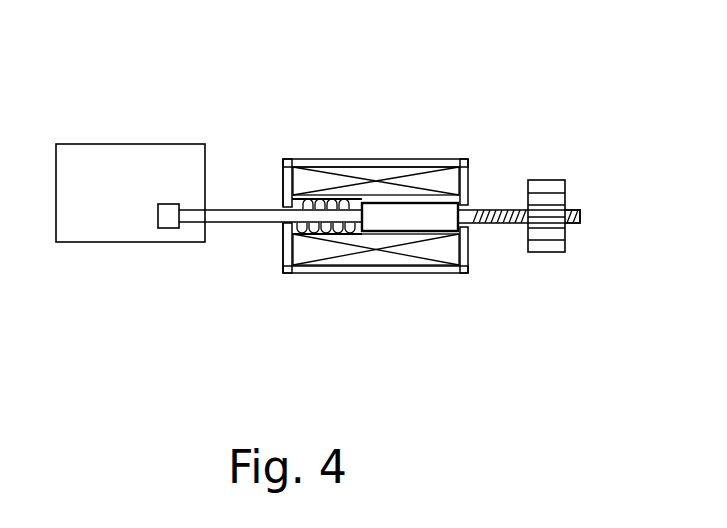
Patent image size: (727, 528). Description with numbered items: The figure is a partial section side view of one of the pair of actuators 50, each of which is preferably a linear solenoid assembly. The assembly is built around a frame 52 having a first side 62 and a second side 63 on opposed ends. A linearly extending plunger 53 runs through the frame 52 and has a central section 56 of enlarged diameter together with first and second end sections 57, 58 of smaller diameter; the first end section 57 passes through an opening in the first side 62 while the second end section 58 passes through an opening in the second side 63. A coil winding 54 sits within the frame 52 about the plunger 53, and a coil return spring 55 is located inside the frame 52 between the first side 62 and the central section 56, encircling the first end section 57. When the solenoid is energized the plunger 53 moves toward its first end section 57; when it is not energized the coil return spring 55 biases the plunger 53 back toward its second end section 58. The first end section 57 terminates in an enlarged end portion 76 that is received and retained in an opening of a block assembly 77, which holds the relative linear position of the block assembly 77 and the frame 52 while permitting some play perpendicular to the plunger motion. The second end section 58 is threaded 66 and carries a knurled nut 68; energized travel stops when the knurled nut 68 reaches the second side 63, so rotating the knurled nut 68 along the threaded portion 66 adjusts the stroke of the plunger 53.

The actuator 50 is at (296, 73).
The frame 52 is at (339, 160).
The plunger 53 is at (432, 213).
The coil winding 54 is at (408, 178).
The coil return spring 55 is at (313, 234).
The central section 56 is at (412, 225).
The first end section 57 is at (228, 216).
The second end section 58 is at (582, 218).
The first side 62 is at (284, 187).
The second side 63 is at (470, 180).
The threaded portion 66 is at (496, 209).
The knurled nut 68 is at (548, 190).
The enlarged end portion 76 is at (167, 222).
The block assembly 77 is at (73, 153).